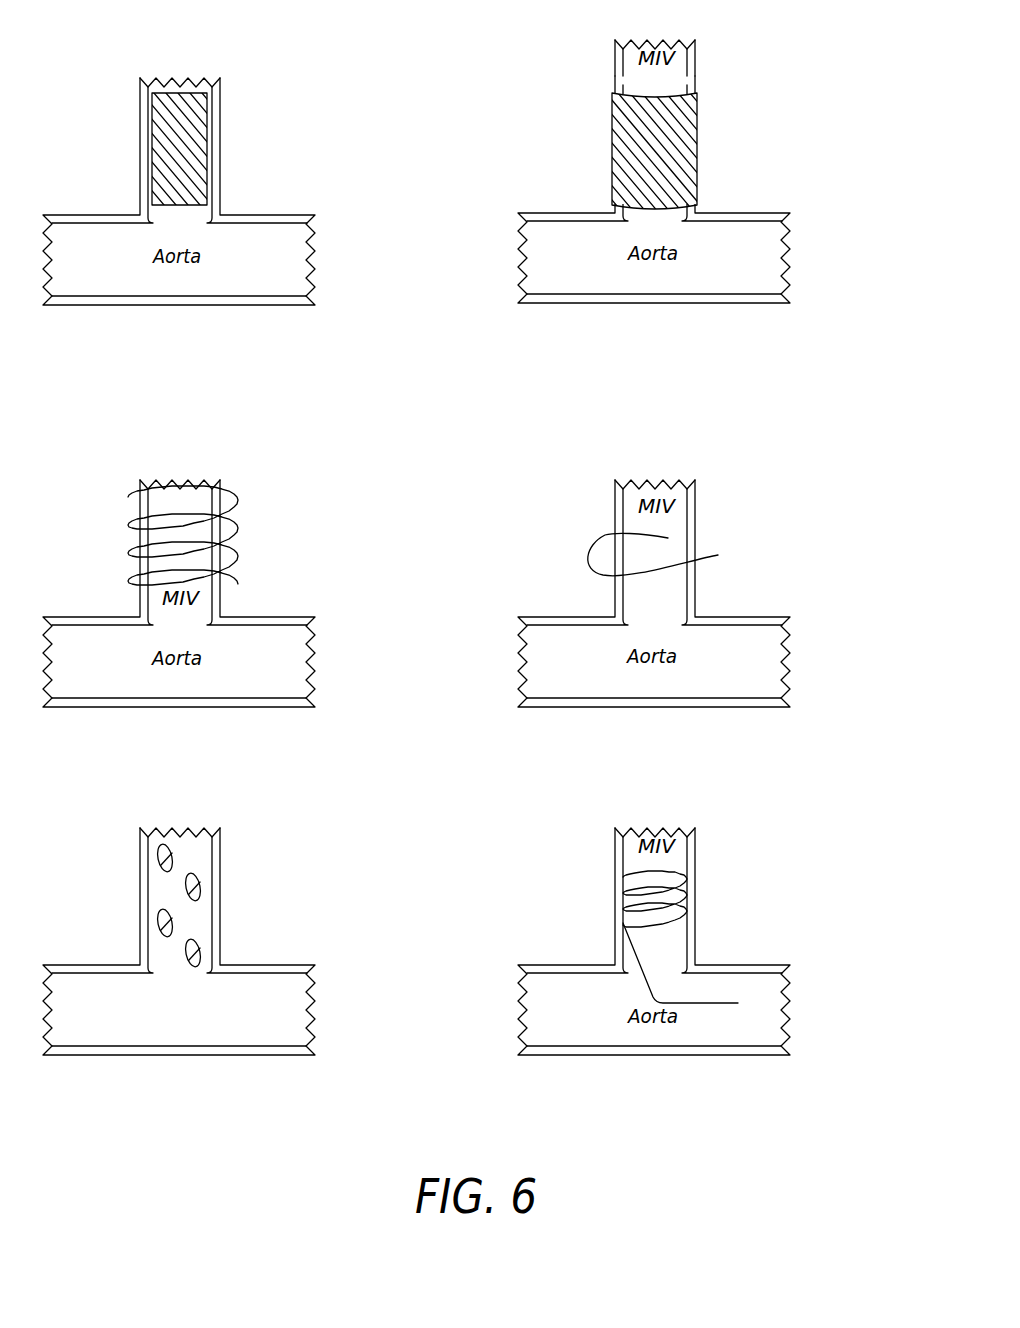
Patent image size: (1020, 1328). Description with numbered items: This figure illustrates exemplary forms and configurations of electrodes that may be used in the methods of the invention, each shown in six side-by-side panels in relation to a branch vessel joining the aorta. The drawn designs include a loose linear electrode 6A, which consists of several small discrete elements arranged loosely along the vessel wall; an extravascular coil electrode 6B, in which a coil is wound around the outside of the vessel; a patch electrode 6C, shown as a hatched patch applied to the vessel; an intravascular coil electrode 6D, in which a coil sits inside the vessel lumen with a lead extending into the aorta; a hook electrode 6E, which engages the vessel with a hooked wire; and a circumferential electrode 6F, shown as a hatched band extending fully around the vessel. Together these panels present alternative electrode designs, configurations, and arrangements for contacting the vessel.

The loose linear electrode 6A is at (197, 948).
The extravascular coil electrode 6B is at (236, 543).
The patch electrode 6C is at (208, 117).
The intravascular coil electrode 6D is at (662, 1093).
The hook electrode 6E is at (703, 556).
The circumferential electrode 6F is at (692, 102).